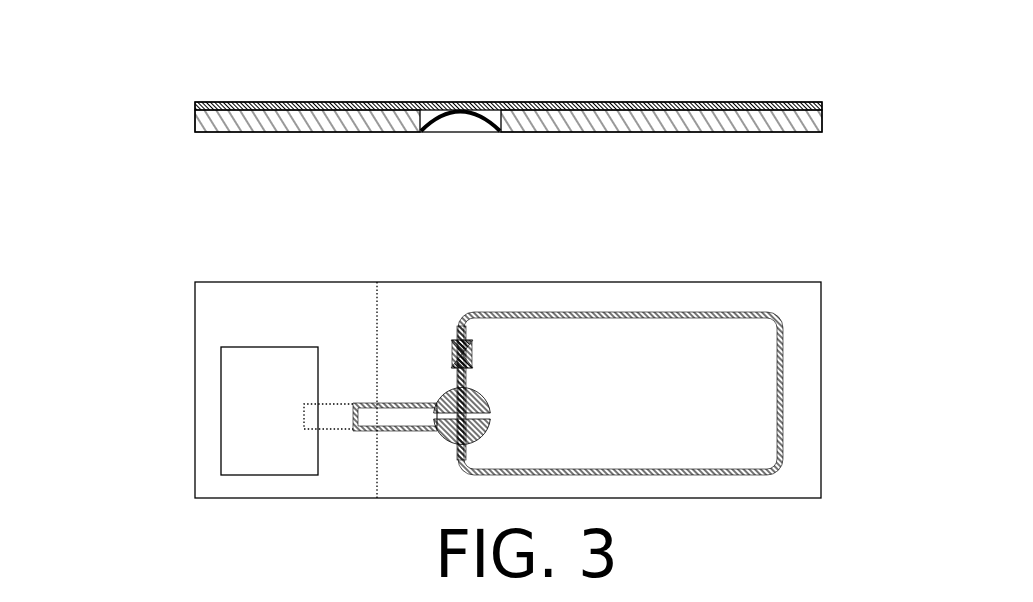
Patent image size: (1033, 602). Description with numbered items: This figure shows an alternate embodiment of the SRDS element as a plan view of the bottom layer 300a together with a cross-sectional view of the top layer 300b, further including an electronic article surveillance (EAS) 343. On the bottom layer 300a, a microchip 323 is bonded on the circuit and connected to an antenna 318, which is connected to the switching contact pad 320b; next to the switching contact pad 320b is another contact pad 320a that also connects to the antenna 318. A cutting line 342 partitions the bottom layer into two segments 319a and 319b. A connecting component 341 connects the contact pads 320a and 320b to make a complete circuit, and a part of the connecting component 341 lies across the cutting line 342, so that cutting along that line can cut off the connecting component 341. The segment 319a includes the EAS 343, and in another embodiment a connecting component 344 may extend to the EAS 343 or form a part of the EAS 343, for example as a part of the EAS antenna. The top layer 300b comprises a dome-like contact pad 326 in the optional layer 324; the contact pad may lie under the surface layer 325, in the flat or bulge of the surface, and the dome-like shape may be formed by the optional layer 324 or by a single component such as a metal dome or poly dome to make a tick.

The bottom layer 300a is at (172, 295).
The top layer 300b is at (185, 110).
The antenna 318 is at (672, 470).
The first segment of bottom layer 319a is at (324, 295).
The second segment of bottom layer 319b is at (515, 294).
The contact pad 320a is at (487, 432).
The switching contact pad 320b is at (487, 403).
The microchip 323 is at (473, 353).
The optional layer 324 is at (227, 118).
The surface layer 325 is at (640, 106).
The dome-like contact pad 326 is at (433, 122).
The connecting component 341 is at (410, 433).
The cutting line 342 is at (378, 370).
The electronic article surveillance (EAS) 343 is at (267, 365).
The connecting component 344 is at (303, 416).